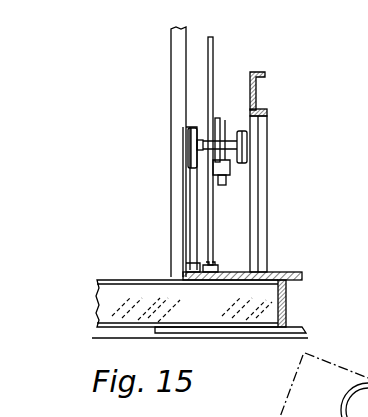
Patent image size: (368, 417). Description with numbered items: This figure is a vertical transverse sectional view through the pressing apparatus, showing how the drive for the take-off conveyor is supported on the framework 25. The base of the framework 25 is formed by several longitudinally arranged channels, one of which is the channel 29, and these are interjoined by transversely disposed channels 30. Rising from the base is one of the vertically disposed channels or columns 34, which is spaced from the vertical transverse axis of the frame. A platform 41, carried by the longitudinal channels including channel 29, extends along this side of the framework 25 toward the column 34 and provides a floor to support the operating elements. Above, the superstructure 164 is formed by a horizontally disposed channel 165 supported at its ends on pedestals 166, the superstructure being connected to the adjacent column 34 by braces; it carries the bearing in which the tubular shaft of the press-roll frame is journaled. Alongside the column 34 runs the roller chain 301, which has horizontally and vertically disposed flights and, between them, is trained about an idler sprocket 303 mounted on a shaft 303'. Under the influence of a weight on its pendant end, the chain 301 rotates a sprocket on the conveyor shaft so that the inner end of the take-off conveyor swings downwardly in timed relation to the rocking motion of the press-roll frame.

The column 34 is at (173, 88).
The roller chain 301 is at (213, 62).
The idler sprocket 303 is at (217, 133).
The shaft 303' is at (227, 194).
The superstructure 164 is at (258, 84).
The horizontally disposed channel 165 is at (257, 100).
The pedestal 166 is at (256, 157).
The transversely disposed channel 30 is at (153, 289).
The platform 41 is at (272, 273).
The longitudinally arranged channel 29 is at (287, 296).
The framework 25 is at (284, 309).